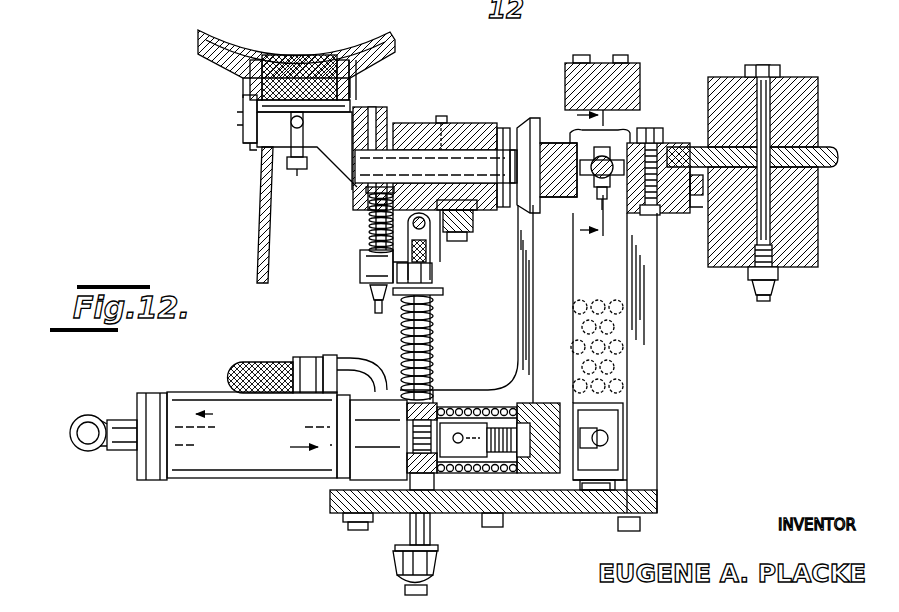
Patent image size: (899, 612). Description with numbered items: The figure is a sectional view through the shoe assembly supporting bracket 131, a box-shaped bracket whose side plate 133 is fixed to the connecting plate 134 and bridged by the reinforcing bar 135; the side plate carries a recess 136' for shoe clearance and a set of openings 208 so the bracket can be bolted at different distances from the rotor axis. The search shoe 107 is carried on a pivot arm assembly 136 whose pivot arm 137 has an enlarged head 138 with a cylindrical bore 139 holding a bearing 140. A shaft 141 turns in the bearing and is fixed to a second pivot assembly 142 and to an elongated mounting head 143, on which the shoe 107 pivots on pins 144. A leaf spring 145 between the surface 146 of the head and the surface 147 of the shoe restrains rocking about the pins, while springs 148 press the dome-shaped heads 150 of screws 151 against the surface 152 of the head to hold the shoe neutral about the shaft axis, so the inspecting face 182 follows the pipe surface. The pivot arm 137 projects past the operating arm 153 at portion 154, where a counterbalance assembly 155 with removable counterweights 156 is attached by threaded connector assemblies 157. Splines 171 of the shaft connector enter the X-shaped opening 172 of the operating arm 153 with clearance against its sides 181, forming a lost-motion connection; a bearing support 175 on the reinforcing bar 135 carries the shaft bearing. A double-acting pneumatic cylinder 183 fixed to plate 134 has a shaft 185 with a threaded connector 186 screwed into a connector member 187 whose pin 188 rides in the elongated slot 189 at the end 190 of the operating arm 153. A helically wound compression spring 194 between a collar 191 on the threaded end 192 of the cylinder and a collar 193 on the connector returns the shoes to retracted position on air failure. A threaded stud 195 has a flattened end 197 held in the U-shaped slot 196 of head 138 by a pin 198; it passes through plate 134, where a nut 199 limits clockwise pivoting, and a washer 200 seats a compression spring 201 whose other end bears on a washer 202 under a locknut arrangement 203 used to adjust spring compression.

The search shoe 107 is at (378, 32).
The shoe assembly supporting bracket 131 is at (662, 458).
The side plate 133 is at (653, 288).
The connecting plate 134 is at (517, 505).
The reinforcing bar 135 is at (637, 63).
The pivot arm assembly 136 is at (466, 229).
The recess 136' is at (537, 275).
The pivot arm 137 is at (522, 130).
The enlarged head 138 is at (437, 118).
The cylindrical bore 139 is at (462, 123).
The bearing 140 is at (462, 212).
The shaft 141 is at (494, 167).
The second pivot assembly 142 is at (333, 167).
The mounting head 143 is at (428, 122).
The pins 144 is at (300, 122).
The leaf spring 145 is at (243, 120).
The surface of head 146 is at (356, 100).
The surface of shoe 147 is at (248, 140).
The springs 148 is at (370, 221).
The dome-shaped heads 150 is at (368, 210).
The screws 151 is at (373, 317).
The surface of head 152 is at (367, 192).
The operating arm 153 is at (587, 285).
The projecting portion of pivot arm 154 is at (667, 142).
The counterbalance assembly 155 is at (804, 77).
The counterweights 156 is at (815, 97).
The threaded connector assemblies 157 is at (762, 65).
The splines 171 is at (598, 130).
The X-shaped opening 172 is at (584, 185).
The bearing support 175 is at (640, 140).
The sides of X-shaped opening 181 is at (592, 192).
The inspecting face 182 is at (300, 55).
The pneumatic cylinder 183 is at (213, 470).
The shaft 185 is at (430, 473).
The threaded connector 186 is at (452, 405).
The connector member 187 is at (533, 405).
The pin 188 is at (608, 438).
The elongated slot 189 is at (593, 482).
The end of operating arm 190 is at (630, 480).
The collar 191 is at (405, 410).
The threaded end 192 is at (440, 438).
The collar 193 is at (517, 470).
The compression spring 194 is at (490, 403).
The threaded stud 195 is at (428, 588).
The U-shaped slot 196 is at (435, 166).
The flattened end 197 is at (430, 243).
The pin 198 is at (370, 233).
The nut 199 is at (416, 582).
The washer 200 is at (407, 483).
The compression spring 201 is at (440, 326).
The washer 202 is at (443, 292).
The locknut arrangement 203 is at (437, 275).
The openings 208 is at (635, 352).